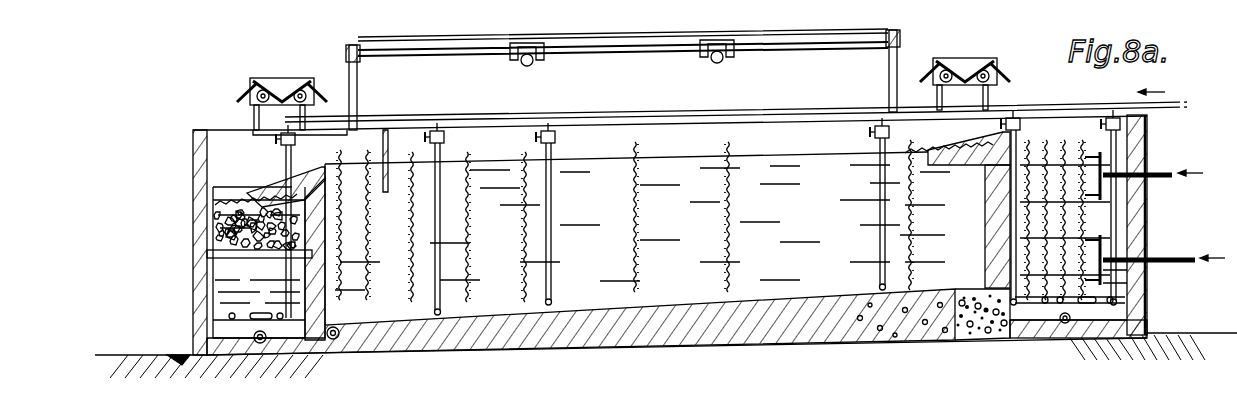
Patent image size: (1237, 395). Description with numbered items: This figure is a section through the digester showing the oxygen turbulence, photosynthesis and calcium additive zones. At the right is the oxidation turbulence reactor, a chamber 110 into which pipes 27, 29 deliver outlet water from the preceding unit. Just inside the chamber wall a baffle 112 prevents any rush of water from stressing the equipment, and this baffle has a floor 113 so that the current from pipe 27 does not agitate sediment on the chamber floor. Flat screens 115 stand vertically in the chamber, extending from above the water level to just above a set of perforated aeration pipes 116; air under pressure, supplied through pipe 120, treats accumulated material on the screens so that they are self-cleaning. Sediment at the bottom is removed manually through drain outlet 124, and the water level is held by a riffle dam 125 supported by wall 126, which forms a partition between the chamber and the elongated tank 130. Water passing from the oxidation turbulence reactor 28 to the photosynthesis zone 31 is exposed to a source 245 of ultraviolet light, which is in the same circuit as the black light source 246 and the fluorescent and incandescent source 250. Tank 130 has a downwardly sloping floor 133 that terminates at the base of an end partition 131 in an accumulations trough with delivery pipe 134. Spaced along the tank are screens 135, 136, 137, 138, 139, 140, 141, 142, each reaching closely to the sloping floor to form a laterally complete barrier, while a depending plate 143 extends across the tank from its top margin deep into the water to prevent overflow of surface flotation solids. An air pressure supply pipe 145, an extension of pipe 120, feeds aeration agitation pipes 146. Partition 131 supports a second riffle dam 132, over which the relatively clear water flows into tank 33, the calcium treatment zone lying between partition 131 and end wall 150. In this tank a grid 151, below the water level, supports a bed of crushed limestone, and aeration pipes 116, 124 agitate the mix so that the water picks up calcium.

The black light source 246 is at (280, 76).
The fluorescent and incandescent light source 250 is at (845, 40).
The ultraviolet light source 245 is at (962, 55).
The oxidation turbulence reactor 28 is at (1040, 100).
The flat screens 115 is at (1043, 130).
The air supply pipe 120 is at (1160, 102).
The photosynthesis zone 31 is at (700, 135).
The air pressure supply pipe 145 is at (790, 112).
The depending plate 143 is at (385, 140).
The aeration agitation pipes 146 is at (440, 155).
The riffle dam 132 is at (300, 180).
The end partition 131 is at (318, 225).
The end wall 150 is at (197, 243).
The calcium treatment tank 33 is at (230, 287).
The aeration pipes 116 is at (222, 300).
The drain outlet 124 is at (257, 337).
The grid 151 is at (235, 258).
The screen 141 is at (367, 247).
The screen 140 is at (410, 254).
The screen 142 is at (346, 300).
The delivery pipe 134 is at (338, 338).
The screen 139 is at (466, 232).
The screen 138 is at (526, 247).
The screen 137 is at (638, 236).
The screen 136 is at (730, 205).
The sloping floor 133 is at (698, 305).
The tank 130 is at (830, 219).
The screen 135 is at (915, 242).
The riffle dam 125 is at (975, 140).
The wall 126 is at (992, 195).
The pipe 29 is at (1144, 176).
The oxidation turbulence reactor chamber 110 is at (1085, 212).
The pipe 27 is at (1180, 257).
The baffle 112 is at (1150, 270).
The baffle floor 113 is at (1125, 300).